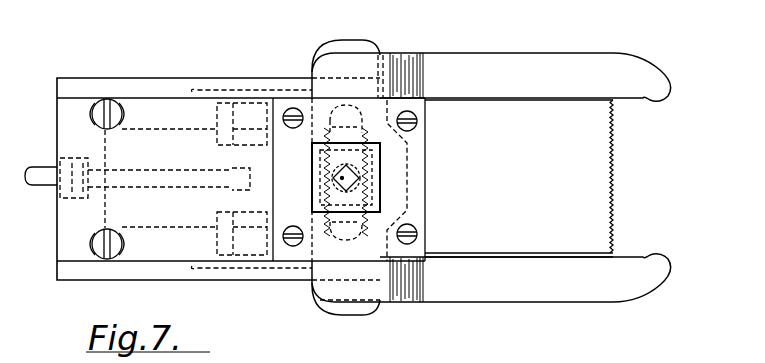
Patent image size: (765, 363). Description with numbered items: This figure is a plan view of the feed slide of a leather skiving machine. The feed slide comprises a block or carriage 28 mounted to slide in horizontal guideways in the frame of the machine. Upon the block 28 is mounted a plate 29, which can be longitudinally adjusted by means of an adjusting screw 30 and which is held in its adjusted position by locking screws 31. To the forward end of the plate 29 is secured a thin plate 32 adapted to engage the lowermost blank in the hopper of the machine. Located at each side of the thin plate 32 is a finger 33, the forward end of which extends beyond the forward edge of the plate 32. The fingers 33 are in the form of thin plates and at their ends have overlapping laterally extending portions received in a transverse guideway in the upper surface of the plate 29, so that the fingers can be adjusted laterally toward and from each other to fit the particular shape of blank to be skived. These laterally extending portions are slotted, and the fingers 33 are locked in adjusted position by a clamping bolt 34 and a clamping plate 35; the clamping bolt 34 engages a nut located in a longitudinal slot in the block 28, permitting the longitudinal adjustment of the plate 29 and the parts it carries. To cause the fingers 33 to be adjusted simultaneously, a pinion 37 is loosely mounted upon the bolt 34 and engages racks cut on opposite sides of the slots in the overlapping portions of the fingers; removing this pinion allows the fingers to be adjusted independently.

The block or carriage 28 is at (126, 88).
The plate 29 is at (170, 107).
The adjusting screw 30 is at (48, 183).
The locking screws 31 is at (102, 248).
The thin plate 32 is at (519, 178).
The finger 33 is at (362, 49).
The clamping bolt 34 is at (342, 178).
The clamping plate 35 is at (320, 152).
The pinion 37 is at (314, 172).